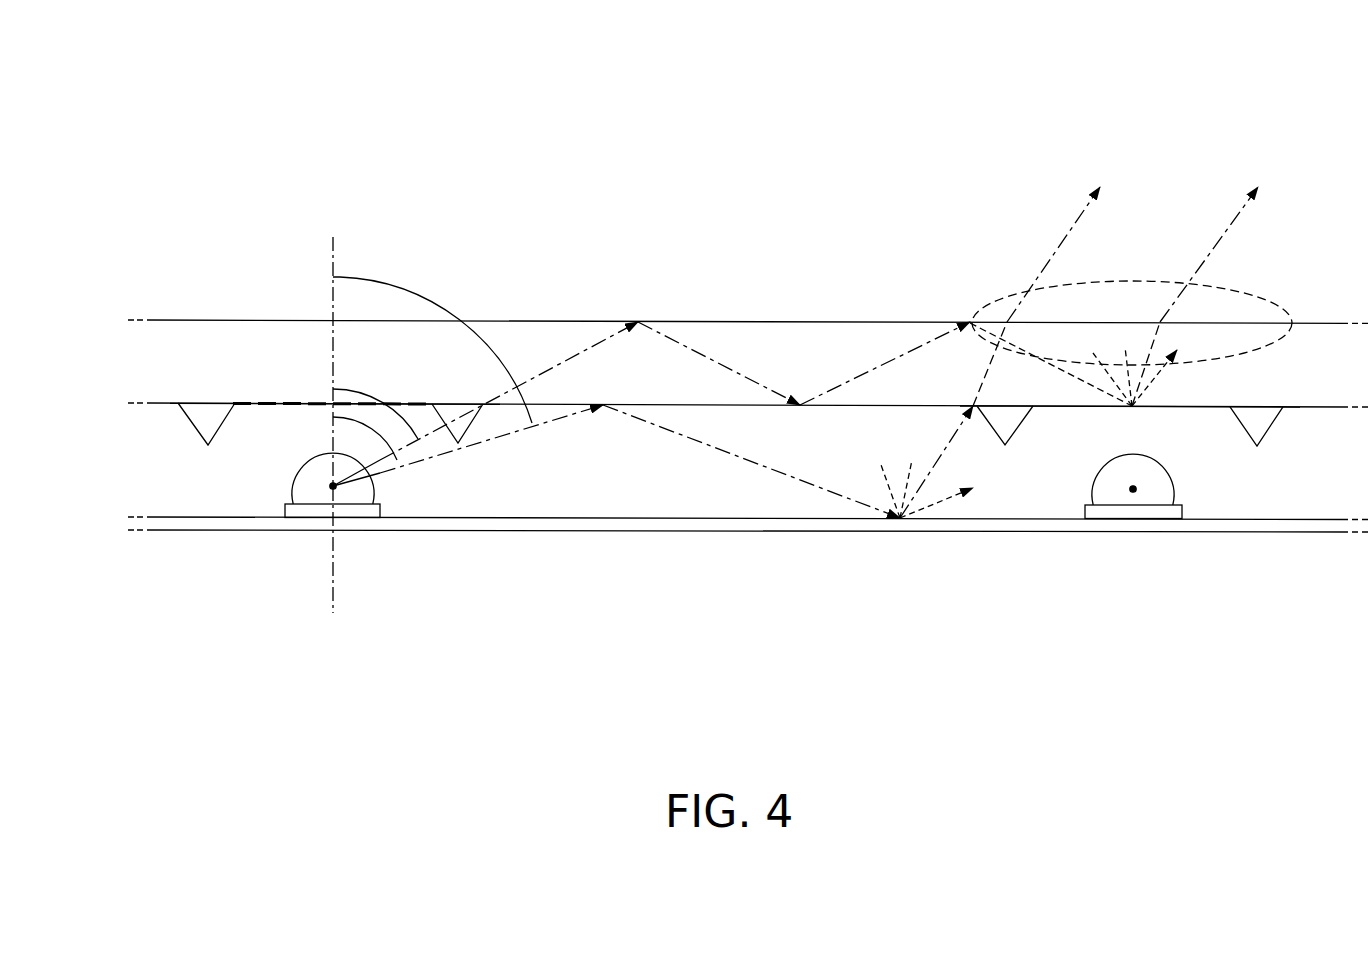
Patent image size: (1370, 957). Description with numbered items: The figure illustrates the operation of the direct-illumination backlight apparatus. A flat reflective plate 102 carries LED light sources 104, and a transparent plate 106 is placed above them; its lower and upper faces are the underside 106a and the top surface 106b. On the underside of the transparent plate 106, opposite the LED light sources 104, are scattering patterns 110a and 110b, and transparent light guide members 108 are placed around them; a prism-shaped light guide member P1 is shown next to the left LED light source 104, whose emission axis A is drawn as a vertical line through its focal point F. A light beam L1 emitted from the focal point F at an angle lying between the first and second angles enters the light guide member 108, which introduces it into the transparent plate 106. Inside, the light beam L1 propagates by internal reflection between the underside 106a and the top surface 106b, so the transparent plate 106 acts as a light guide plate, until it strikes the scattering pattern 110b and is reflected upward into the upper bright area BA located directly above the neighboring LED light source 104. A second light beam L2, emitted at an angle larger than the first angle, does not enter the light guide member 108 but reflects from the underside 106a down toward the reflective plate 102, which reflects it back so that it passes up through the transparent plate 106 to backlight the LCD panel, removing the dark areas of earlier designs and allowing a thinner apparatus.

The reflective plate 102 is at (155, 524).
The LED light source 104 is at (305, 483).
The transparent plate 106 is at (746, 371).
The underside of transparent plate 106a is at (778, 414).
The top surface of transparent plate 106b is at (765, 312).
The light guide member 108 is at (205, 423).
The scattering pattern 110a is at (263, 406).
The scattering pattern 110b is at (1063, 418).
The optical axis A is at (333, 240).
The focal point F is at (335, 490).
The light beam L1 is at (603, 336).
The light beam L2 is at (573, 416).
The first prism P1 is at (458, 446).
The upper bright area BA is at (1138, 280).